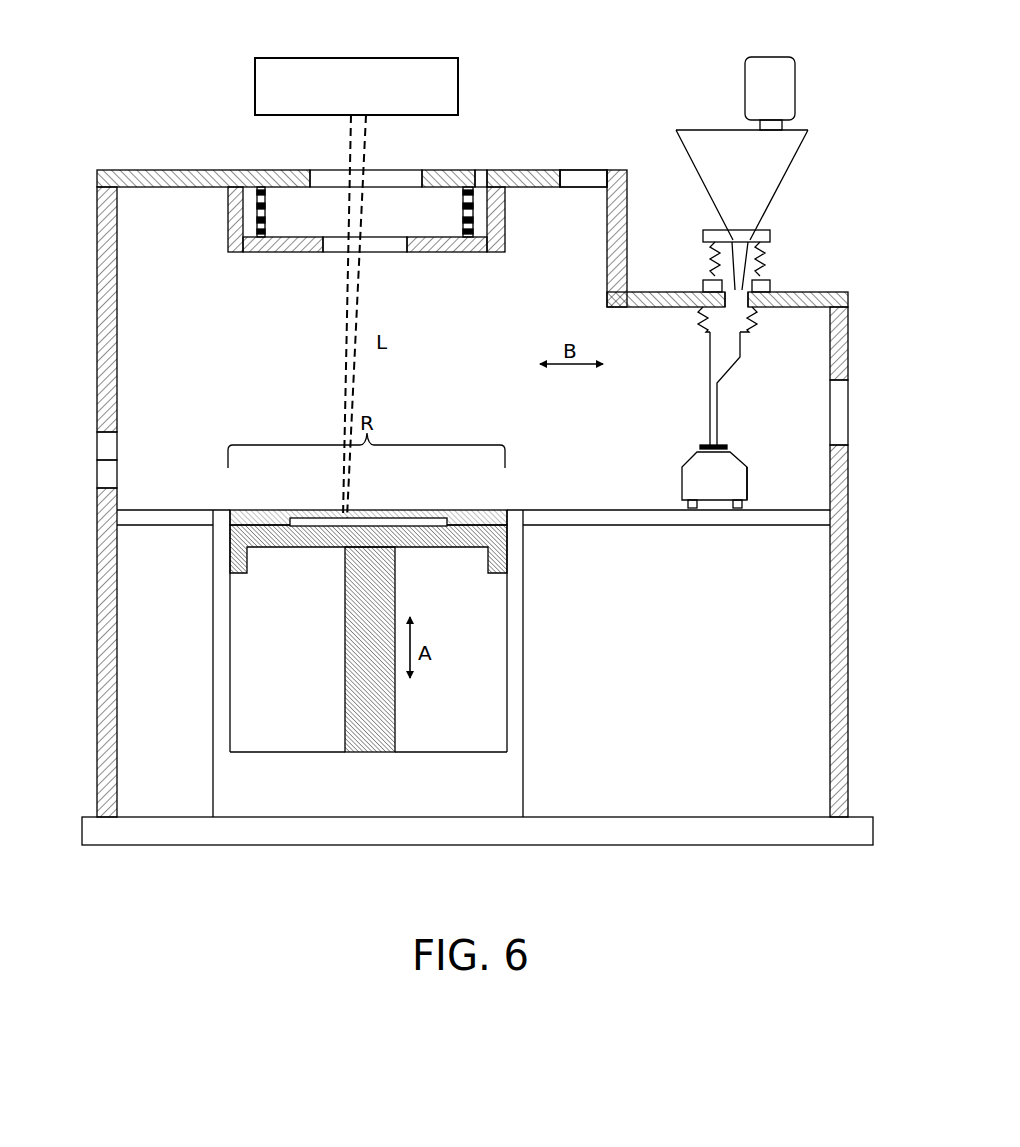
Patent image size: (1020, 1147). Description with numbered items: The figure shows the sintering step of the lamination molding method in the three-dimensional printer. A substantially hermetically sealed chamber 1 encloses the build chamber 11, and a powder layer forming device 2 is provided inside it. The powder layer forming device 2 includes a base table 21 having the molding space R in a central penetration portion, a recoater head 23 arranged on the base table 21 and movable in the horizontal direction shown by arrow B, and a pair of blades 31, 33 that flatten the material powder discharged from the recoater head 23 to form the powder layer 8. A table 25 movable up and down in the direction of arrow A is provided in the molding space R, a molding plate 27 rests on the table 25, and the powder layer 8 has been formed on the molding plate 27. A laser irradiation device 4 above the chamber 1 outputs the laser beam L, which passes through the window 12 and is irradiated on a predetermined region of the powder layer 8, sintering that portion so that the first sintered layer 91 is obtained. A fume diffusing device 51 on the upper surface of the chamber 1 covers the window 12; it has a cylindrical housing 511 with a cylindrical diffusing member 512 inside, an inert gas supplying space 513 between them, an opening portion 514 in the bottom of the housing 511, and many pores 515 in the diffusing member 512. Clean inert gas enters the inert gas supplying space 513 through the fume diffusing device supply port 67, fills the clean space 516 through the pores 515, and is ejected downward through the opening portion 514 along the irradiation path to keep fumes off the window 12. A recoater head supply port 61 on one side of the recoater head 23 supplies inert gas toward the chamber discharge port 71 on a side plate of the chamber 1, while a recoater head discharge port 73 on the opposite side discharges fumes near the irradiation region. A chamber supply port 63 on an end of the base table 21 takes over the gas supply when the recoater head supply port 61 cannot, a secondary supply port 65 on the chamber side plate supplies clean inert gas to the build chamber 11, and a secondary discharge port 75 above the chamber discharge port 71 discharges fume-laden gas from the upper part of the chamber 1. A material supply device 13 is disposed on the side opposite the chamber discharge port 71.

The chamber 1 is at (112, 168).
The laser irradiation device 4 is at (372, 340).
The window 12 is at (311, 184).
The fume diffusing device supply port 67 is at (482, 185).
The secondary discharge port 75 is at (598, 185).
The material supply device 13 is at (768, 192).
The pores 515 is at (257, 223).
The clean space 516 is at (364, 212).
The diffusing member 512 is at (463, 212).
The housing 511 is at (503, 210).
The inert gas supplying space 513 is at (480, 222).
The opening portion 514 is at (390, 253).
The fume diffusing device 51 is at (373, 256).
The secondary supply port 65 is at (105, 438).
The chamber supply port 63 is at (105, 486).
The build chamber 11 is at (360, 347).
The powder layer forming device 2 is at (649, 446).
The first sintered layer 91 is at (392, 510).
The powder layer 8 is at (305, 547).
The molding plate 27 is at (412, 545).
The table 25 is at (505, 537).
The base table 21 is at (568, 517).
The recoater head 23 is at (695, 476).
The blade 33 is at (692, 509).
The blade 31 is at (740, 509).
The recoater head supply port 61 is at (748, 468).
The recoater head discharge port 73 is at (683, 467).
The chamber discharge port 71 is at (835, 437).